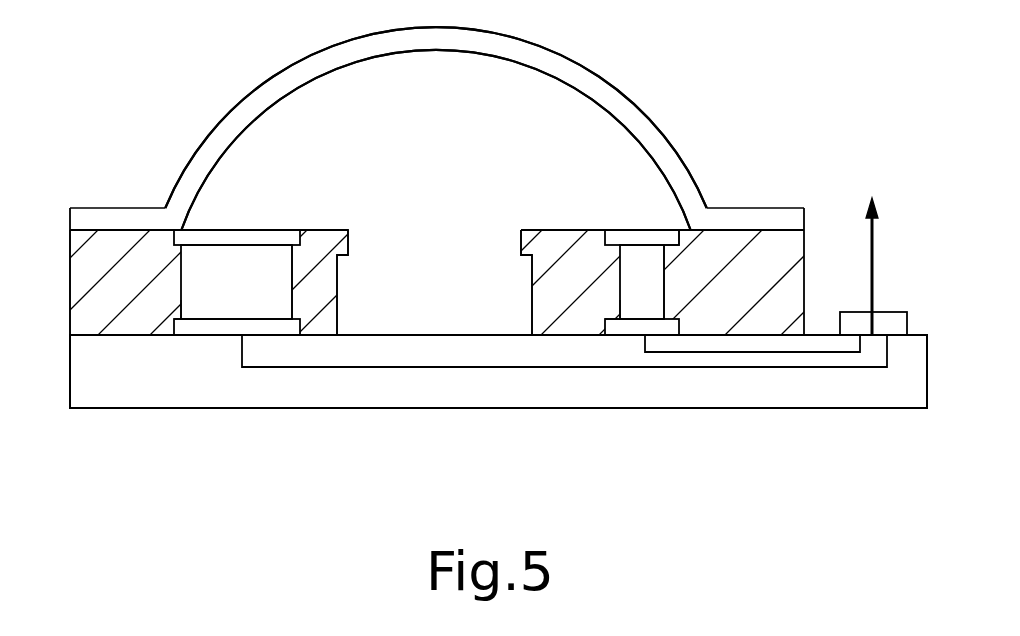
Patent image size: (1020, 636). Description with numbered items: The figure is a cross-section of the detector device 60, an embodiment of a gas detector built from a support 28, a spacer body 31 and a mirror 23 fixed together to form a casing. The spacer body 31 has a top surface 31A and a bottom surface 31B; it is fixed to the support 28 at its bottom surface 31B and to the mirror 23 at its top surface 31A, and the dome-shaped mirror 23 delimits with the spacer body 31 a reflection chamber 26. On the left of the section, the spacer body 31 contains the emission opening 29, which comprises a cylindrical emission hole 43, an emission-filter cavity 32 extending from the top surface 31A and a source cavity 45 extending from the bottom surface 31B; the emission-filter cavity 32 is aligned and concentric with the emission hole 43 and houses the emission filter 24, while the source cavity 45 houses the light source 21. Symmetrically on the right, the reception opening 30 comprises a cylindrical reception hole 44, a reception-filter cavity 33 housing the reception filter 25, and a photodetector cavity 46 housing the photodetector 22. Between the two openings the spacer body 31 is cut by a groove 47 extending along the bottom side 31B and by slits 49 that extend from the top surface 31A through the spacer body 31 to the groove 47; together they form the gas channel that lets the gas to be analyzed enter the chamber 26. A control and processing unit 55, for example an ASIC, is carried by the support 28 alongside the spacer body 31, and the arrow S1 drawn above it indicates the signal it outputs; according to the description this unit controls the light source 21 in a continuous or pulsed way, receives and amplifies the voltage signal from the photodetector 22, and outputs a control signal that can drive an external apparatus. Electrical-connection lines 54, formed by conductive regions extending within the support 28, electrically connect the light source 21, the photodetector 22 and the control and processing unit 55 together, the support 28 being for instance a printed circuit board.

The detector device 60 is at (197, 82).
The mirror 23 is at (296, 74).
The reflection chamber 26 is at (411, 134).
The support 28 is at (81, 399).
The spacer body 31 is at (86, 270).
The top surface 31A is at (130, 220).
The bottom surface 31B is at (84, 345).
The emission-filter cavity 32 is at (178, 263).
The emission filter 24 is at (238, 232).
The emission hole 43 is at (216, 302).
The light source 21 is at (228, 328).
The emission opening 29 is at (291, 262).
The source cavity 45 is at (176, 311).
The slits 49 is at (411, 252).
The groove 47 is at (473, 312).
The reception filter 25 is at (622, 232).
The reception hole 44 is at (633, 280).
The photodetector 22 is at (626, 328).
The reception-filter cavity 33 is at (673, 258).
The reception opening 30 is at (657, 301).
The photodetector cavity 46 is at (611, 311).
The electrical-connection lines 54 is at (858, 368).
The control and processing unit 55 is at (867, 318).
The signal direction S1 is at (889, 266).